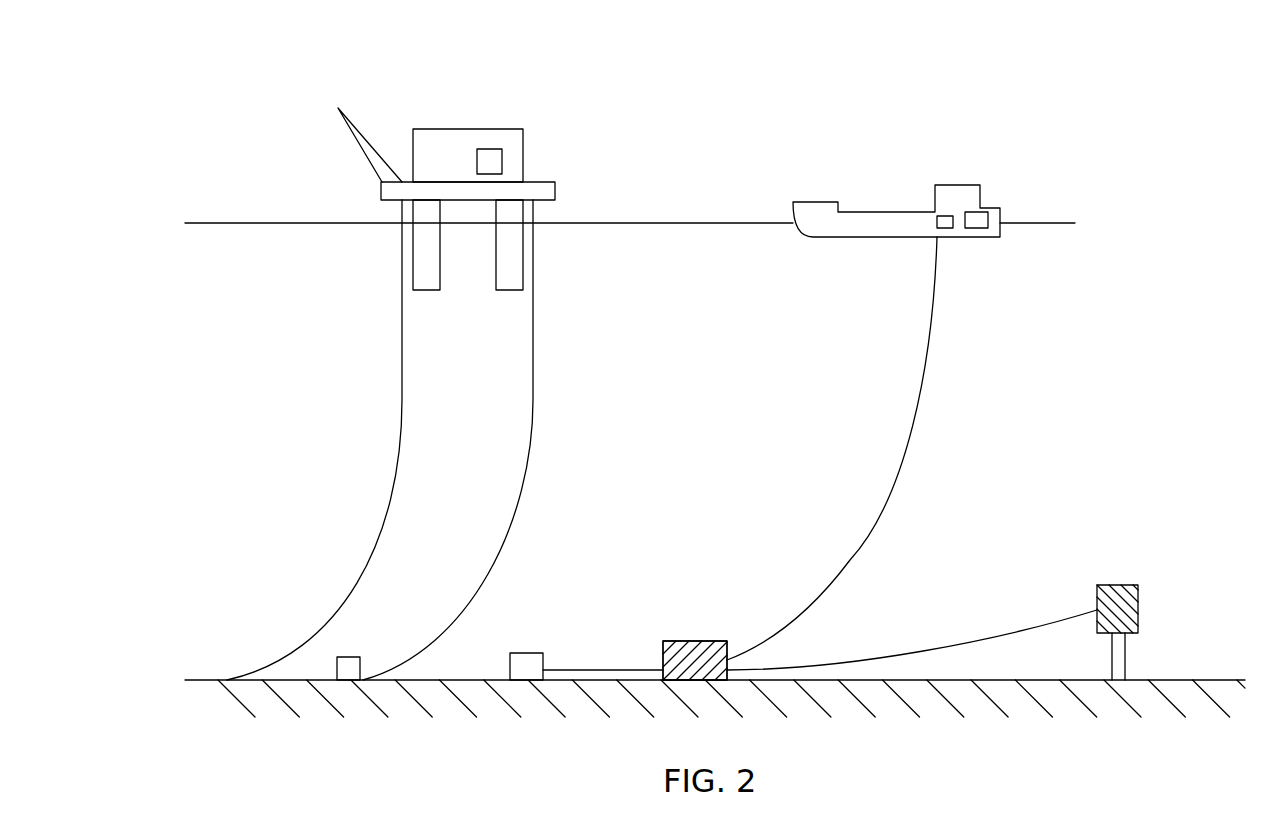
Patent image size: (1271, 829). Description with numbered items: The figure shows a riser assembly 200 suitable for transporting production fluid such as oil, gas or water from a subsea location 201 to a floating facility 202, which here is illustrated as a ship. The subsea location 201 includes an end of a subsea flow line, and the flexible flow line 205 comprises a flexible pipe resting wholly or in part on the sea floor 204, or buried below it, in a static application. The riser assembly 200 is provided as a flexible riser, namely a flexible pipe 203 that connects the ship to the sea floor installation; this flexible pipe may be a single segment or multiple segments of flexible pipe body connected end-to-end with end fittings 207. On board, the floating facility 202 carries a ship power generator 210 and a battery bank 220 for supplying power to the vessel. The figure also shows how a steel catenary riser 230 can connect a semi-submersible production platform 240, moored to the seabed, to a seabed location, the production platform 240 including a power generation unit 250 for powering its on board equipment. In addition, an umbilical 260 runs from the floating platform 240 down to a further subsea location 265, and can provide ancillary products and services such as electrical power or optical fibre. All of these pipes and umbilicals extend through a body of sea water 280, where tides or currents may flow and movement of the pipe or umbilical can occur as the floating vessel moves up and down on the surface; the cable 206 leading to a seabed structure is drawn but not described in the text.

The riser assembly 200 is at (911, 250).
The subsea location 201 is at (700, 641).
The floating facility 202 is at (815, 202).
The flexible pipe 203 is at (877, 503).
The sea floor 204 is at (1187, 680).
The flexible flow line 205 is at (610, 670).
The subsea cable to post 206 is at (1030, 612).
The end fittings 207 is at (695, 660).
The ship power generator 210 is at (983, 210).
The battery bank 220 is at (945, 216).
The steel catenary riser 230 is at (402, 385).
The semi-submersible production platform 240 is at (499, 81).
The power generation unit 250 is at (493, 162).
The umbilical 260 is at (533, 378).
The subsea location 265 is at (252, 666).
The sea water 280 is at (757, 366).